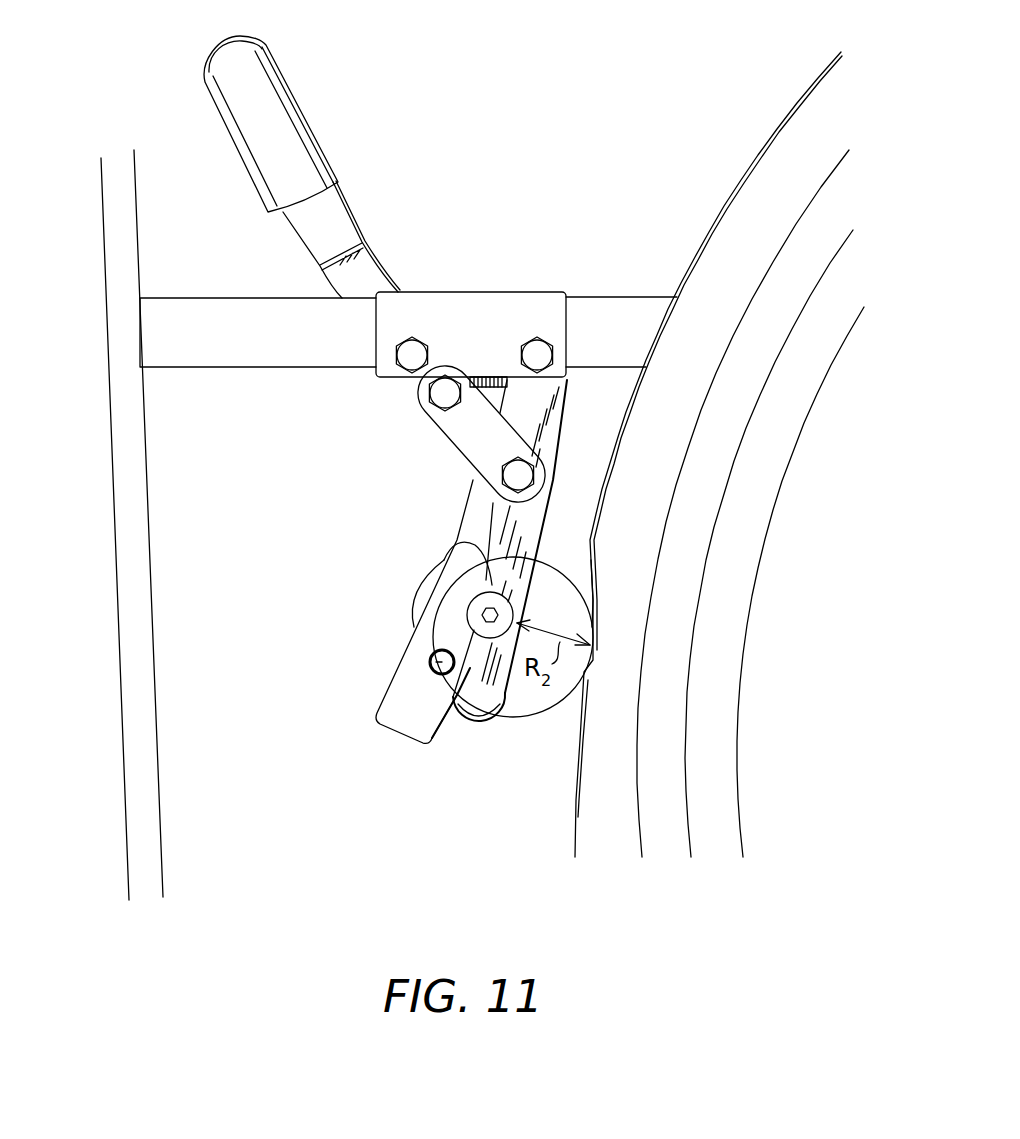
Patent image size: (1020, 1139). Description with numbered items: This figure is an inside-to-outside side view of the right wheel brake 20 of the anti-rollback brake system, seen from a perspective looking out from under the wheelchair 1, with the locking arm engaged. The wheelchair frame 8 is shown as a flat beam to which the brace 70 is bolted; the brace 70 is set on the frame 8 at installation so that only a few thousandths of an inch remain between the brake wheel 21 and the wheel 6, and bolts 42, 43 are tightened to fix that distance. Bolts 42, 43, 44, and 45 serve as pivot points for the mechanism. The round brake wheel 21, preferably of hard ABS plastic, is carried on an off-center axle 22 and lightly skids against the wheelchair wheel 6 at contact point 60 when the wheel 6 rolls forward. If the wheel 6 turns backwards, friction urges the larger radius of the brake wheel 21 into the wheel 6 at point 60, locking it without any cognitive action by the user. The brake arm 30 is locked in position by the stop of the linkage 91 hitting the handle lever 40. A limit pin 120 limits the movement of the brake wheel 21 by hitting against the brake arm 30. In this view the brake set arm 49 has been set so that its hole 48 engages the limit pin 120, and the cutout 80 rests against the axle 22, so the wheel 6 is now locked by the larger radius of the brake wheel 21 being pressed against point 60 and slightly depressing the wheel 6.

The wheelchair 1 is at (111, 735).
The wheel 6 is at (788, 164).
The wheelchair frame 8 is at (237, 322).
The right wheel brake 20 is at (462, 253).
The brake wheel 21 is at (568, 700).
The axle 22 is at (484, 614).
The brake arm 30 is at (429, 663).
The handle lever 40 is at (288, 116).
The bolt 42 is at (412, 362).
The bolt 43 is at (542, 356).
The bolt 44 is at (445, 395).
The bolt 45 is at (517, 474).
The hole 48 is at (482, 706).
The brake set arm 49 is at (390, 700).
The contact point 60 is at (597, 627).
The brace 70 is at (507, 307).
The cutout 80 is at (453, 543).
The linkage 91 is at (492, 440).
The limit pin 120 is at (430, 656).